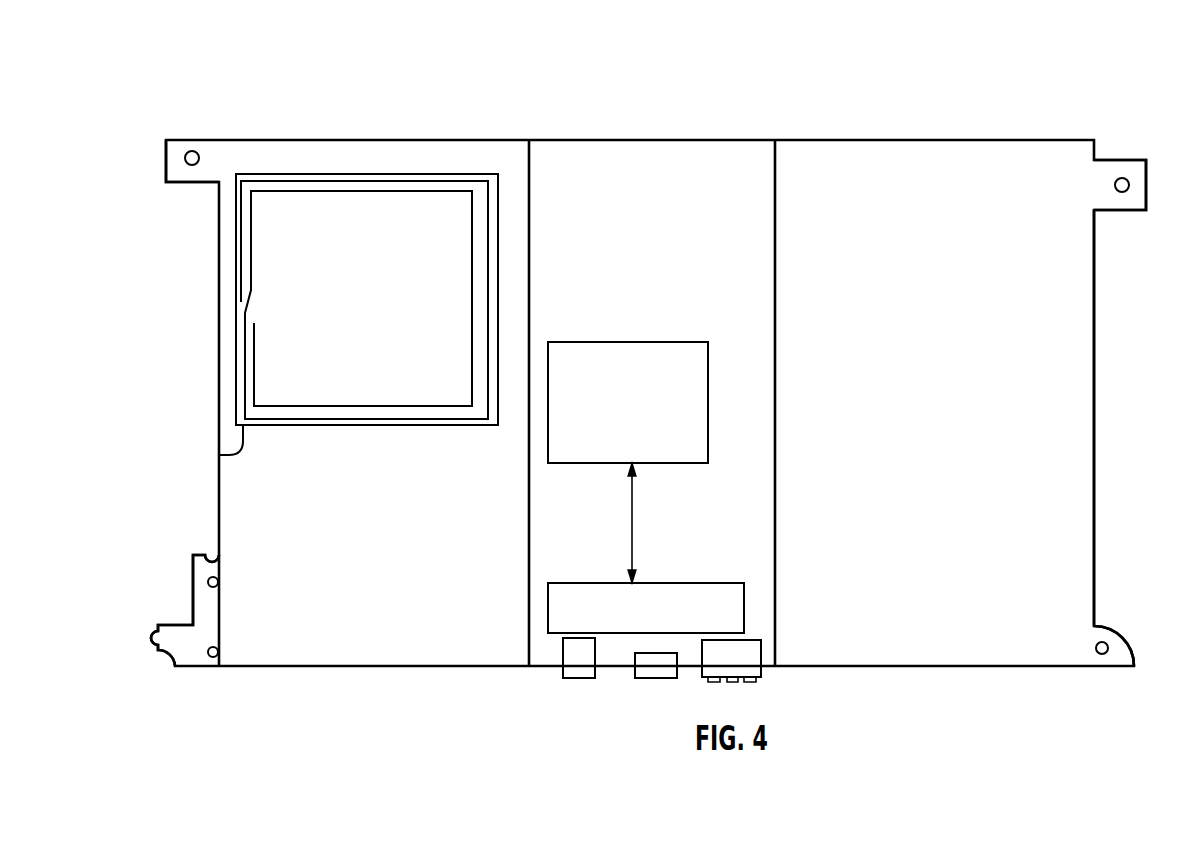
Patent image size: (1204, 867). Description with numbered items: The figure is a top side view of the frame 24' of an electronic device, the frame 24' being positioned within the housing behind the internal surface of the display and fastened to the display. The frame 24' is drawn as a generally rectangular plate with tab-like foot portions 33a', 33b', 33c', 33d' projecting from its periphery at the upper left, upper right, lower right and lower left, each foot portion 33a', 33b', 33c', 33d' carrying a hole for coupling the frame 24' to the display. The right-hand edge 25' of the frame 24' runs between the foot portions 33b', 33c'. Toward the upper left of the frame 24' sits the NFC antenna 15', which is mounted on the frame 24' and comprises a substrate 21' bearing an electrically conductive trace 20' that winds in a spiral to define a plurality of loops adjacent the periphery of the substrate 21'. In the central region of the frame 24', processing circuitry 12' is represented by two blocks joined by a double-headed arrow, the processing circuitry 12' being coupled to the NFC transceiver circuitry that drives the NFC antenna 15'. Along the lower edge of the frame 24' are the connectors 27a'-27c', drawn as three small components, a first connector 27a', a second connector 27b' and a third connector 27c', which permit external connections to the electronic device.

The frame 24' is at (671, 368).
The foot portion 33a' is at (197, 123).
The foot portion 33b' is at (1148, 158).
The foot portion 33c' is at (1145, 638).
The foot portion 33d' is at (179, 645).
The edge of circuit board 25' is at (1130, 418).
The NFC antenna 15' is at (330, 235).
The electrically conductive trace 20' is at (204, 366).
The substrate 21' is at (211, 464).
The processing circuitry 12' is at (598, 489).
The connectors 27a'-27c' is at (659, 699).
The connector 27a' is at (579, 658).
The connector 27b' is at (656, 665).
The connector 27c' is at (731, 661).